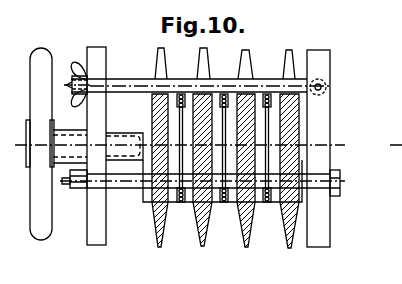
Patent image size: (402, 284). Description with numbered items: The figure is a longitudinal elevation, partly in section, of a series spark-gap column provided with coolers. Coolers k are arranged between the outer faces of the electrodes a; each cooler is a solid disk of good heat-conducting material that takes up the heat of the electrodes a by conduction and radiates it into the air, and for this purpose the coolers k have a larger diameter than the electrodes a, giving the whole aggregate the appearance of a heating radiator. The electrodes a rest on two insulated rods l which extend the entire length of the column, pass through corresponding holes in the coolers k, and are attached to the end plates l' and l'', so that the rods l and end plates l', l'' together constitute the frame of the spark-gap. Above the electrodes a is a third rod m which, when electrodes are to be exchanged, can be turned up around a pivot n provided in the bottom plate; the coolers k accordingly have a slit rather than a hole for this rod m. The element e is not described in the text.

The third rod m is at (125, 78).
The pivot n is at (327, 87).
The end plate l'' is at (83, 165).
The end plate l' is at (332, 148).
The insulated rod l is at (124, 180).
The cooler k is at (163, 228).
The electrode a is at (229, 203).
The roller element e is at (264, 203).